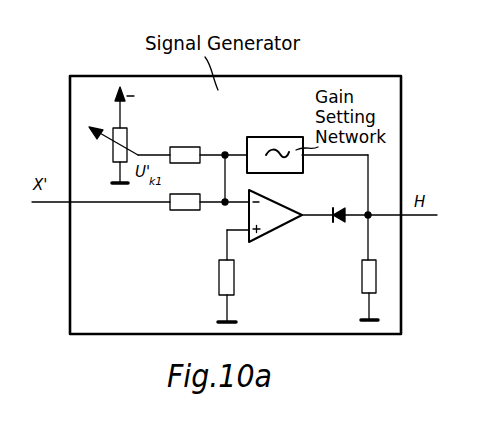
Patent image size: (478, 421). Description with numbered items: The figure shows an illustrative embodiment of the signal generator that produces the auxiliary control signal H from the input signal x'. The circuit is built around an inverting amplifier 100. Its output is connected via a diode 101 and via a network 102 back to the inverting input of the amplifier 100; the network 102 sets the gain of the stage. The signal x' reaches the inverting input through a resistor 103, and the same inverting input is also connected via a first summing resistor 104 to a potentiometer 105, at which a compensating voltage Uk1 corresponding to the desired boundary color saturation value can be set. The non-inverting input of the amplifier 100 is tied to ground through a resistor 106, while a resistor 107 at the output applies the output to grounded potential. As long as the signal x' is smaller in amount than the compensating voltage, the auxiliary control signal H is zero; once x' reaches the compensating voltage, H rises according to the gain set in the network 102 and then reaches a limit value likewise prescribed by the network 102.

The inverting amplifier 100 is at (278, 222).
The diode 101 is at (342, 223).
The network 102 is at (280, 143).
The input resistor 103 is at (180, 210).
The first summing resistor 104 is at (184, 146).
The potentiometer 105 is at (113, 158).
The resistor 106 is at (219, 278).
The resistor 107 is at (362, 278).